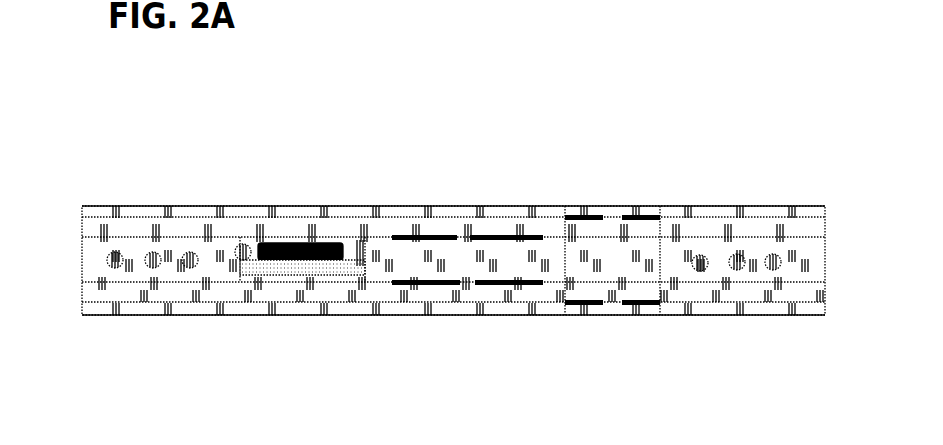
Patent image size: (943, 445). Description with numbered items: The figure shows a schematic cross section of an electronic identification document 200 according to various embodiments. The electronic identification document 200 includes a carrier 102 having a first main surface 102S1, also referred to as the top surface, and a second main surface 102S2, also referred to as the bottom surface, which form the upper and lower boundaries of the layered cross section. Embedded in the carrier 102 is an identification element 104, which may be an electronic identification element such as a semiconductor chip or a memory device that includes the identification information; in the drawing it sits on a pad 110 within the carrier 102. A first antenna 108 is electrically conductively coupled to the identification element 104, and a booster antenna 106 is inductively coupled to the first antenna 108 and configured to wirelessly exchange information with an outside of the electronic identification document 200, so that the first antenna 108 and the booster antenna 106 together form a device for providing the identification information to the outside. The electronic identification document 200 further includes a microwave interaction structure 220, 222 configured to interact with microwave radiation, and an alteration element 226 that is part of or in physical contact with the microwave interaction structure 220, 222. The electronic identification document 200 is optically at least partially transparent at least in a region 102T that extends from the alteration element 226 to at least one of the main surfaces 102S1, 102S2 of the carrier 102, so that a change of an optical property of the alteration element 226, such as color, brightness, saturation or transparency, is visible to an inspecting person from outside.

The electronic identification document 200 is at (745, 147).
The carrier 102 is at (97, 305).
The first main surface 102S1 is at (192, 182).
The second main surface 102S2 is at (177, 353).
The region 102T is at (610, 207).
The identification element 104 is at (289, 243).
The first antenna 108 is at (358, 263).
The die attach pad 110 is at (310, 276).
The microwave interaction structure 220 is at (427, 247).
The microwave interaction structure 222 is at (578, 215).
The alteration element 226 is at (526, 317).
The booster antenna 106 is at (773, 263).